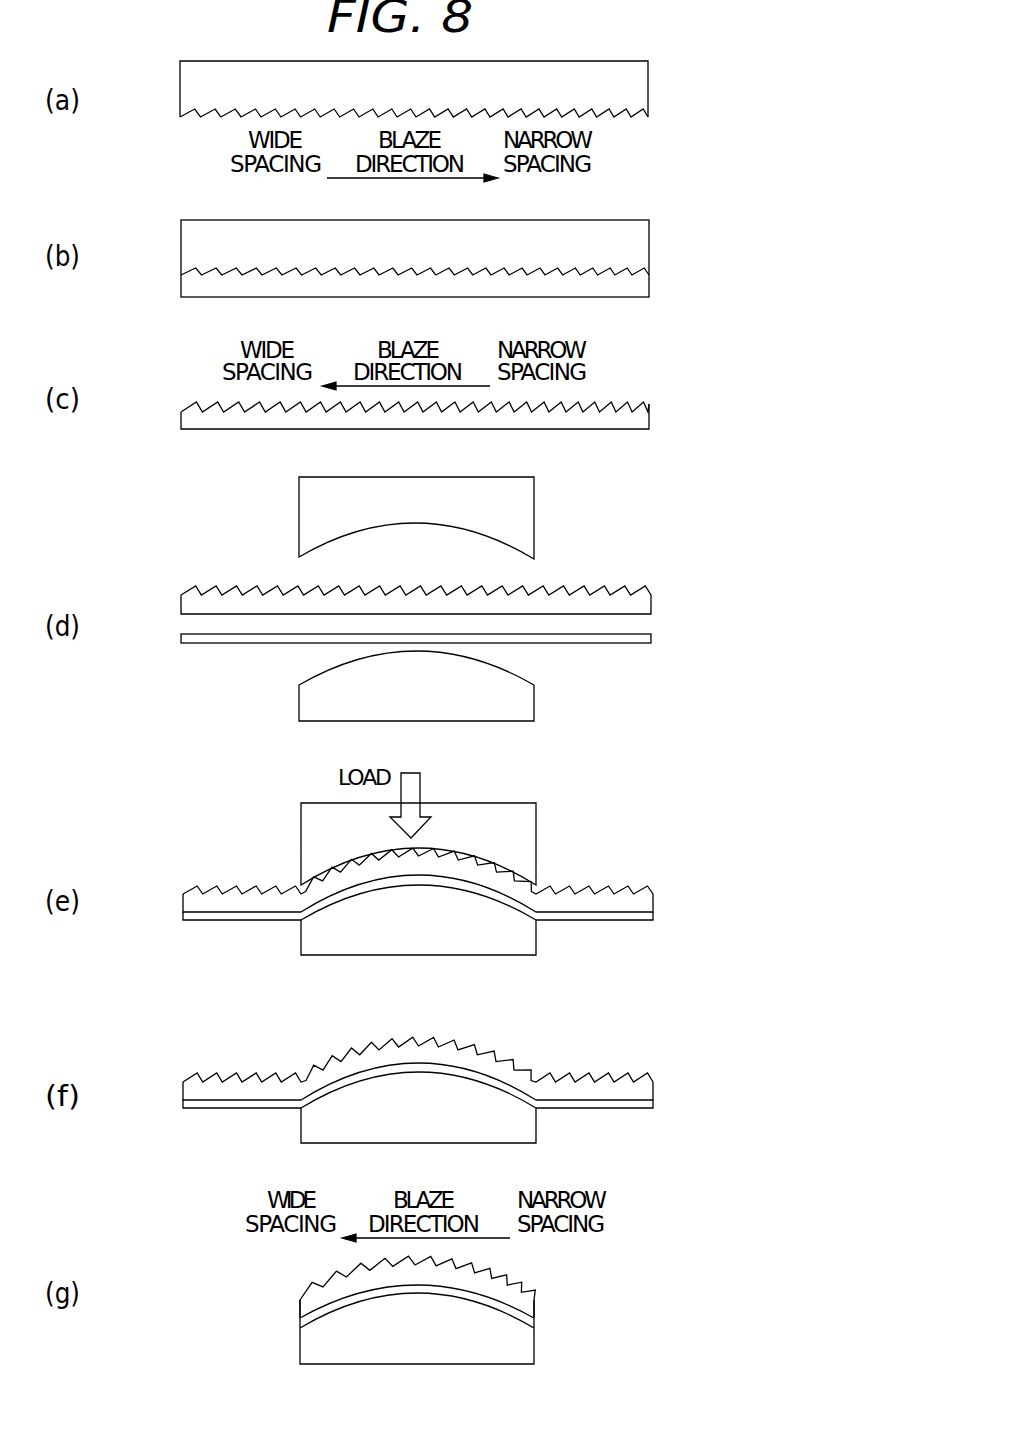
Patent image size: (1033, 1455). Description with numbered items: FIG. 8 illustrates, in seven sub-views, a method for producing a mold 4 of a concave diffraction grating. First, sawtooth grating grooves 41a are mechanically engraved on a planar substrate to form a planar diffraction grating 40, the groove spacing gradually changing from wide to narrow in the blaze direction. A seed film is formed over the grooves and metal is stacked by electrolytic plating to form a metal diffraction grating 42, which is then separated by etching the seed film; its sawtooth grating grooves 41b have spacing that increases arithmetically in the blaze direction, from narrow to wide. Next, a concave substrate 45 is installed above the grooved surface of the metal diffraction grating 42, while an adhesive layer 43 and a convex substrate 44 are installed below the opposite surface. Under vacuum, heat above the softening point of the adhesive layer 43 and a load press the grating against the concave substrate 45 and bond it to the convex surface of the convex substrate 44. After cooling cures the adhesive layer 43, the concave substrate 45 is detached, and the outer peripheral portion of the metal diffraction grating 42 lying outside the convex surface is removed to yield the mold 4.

The mold of the concave diffraction grating 4 is at (286, 1345).
The planar diffraction grating 40 is at (188, 90).
The grating grooves 41a is at (637, 112).
The grating grooves 41b is at (619, 406).
The metal diffraction grating 42 is at (634, 284).
The adhesive layer 43 is at (600, 637).
The convex substrate 44 is at (332, 685).
The concave substrate 45 is at (517, 525).